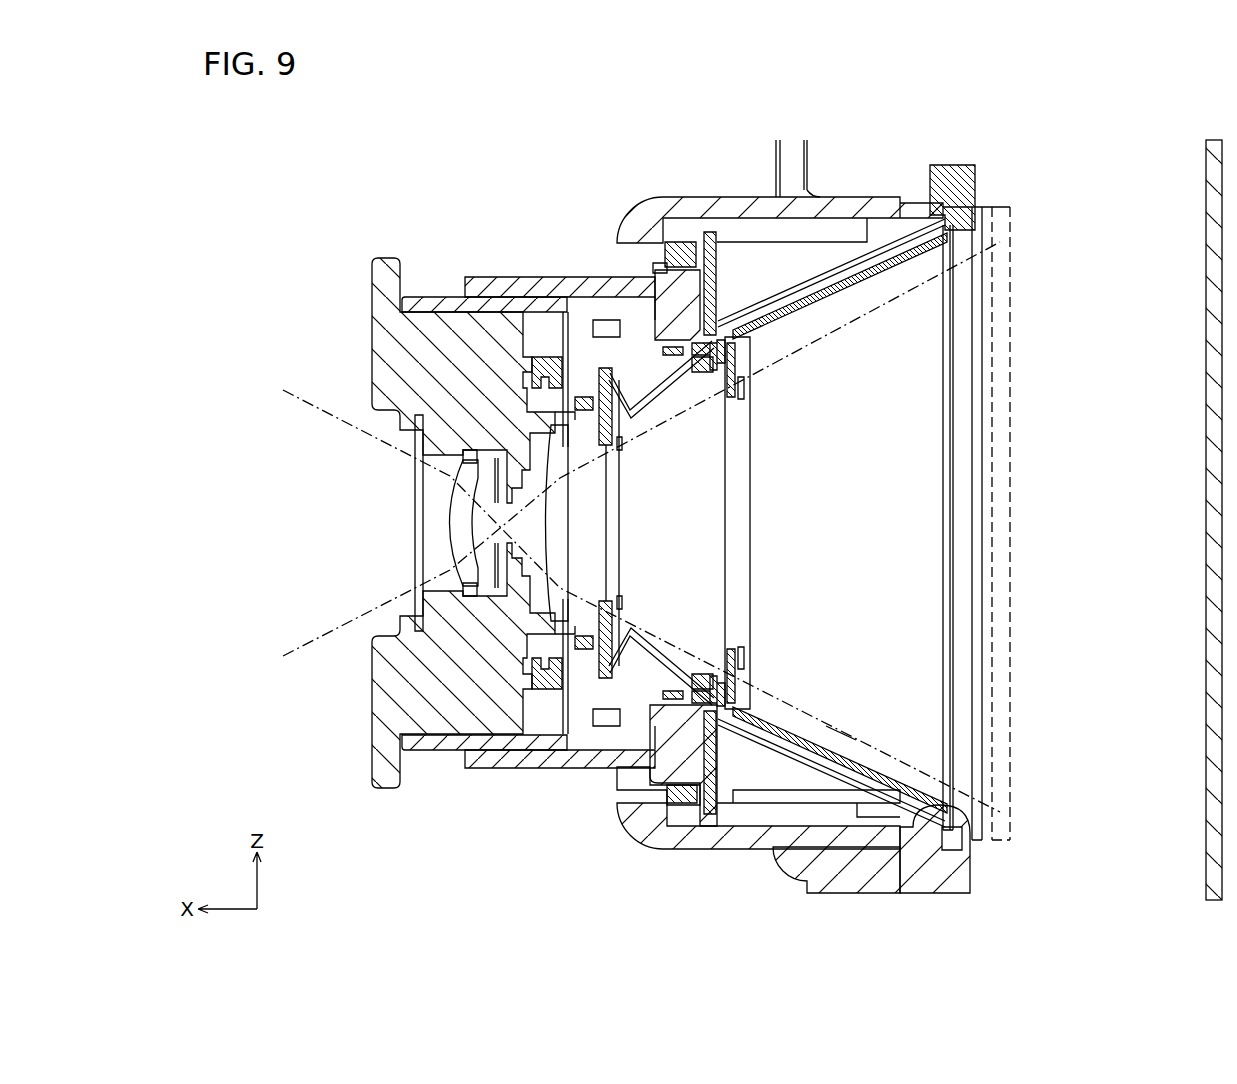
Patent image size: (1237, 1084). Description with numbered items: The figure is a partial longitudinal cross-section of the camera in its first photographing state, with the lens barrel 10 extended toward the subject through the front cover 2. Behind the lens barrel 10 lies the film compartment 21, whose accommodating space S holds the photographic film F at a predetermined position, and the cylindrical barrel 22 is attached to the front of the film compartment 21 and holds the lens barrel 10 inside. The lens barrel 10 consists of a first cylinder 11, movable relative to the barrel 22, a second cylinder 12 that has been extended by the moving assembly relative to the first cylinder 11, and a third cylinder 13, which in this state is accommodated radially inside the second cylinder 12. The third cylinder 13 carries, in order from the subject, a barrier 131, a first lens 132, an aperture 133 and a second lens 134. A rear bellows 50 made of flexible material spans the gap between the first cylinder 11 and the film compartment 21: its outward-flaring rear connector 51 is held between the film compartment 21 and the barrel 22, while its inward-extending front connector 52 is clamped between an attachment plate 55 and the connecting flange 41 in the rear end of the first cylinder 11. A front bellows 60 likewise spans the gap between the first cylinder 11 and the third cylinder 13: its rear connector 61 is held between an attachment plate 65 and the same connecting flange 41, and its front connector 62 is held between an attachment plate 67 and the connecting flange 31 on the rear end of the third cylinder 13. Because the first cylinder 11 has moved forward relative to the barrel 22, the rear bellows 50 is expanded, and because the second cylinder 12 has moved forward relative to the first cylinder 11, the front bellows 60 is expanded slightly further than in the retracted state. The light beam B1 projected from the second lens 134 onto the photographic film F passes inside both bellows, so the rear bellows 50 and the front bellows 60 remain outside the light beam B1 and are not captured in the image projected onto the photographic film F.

The front cover 2 is at (783, 543).
The lens barrel 10 is at (502, 555).
The first cylinder 11 is at (543, 768).
The second cylinder 12 is at (483, 748).
The third cylinder 13 is at (374, 695).
The film compartment 21 is at (953, 878).
The barrel 22 is at (680, 250).
The connecting flange 31 is at (552, 358).
The connecting flange 41 is at (702, 372).
The rear bellows 50 is at (912, 252).
The rear connector 51 is at (972, 207).
The front connector 52 is at (751, 400).
The attachment plate 55 is at (738, 348).
The front bellows 60 is at (655, 402).
The rear connector 61 is at (700, 690).
The front connector 62 is at (603, 447).
The attachment plate 65 is at (622, 778).
The attachment plate 67 is at (626, 440).
The barrier 131 is at (420, 505).
The first lens 132 is at (450, 525).
The aperture 133 is at (466, 460).
The second lens 134 is at (562, 540).
The light beam B1 is at (840, 740).
The photographic film F is at (1014, 715).
The accommodating space S is at (1097, 532).